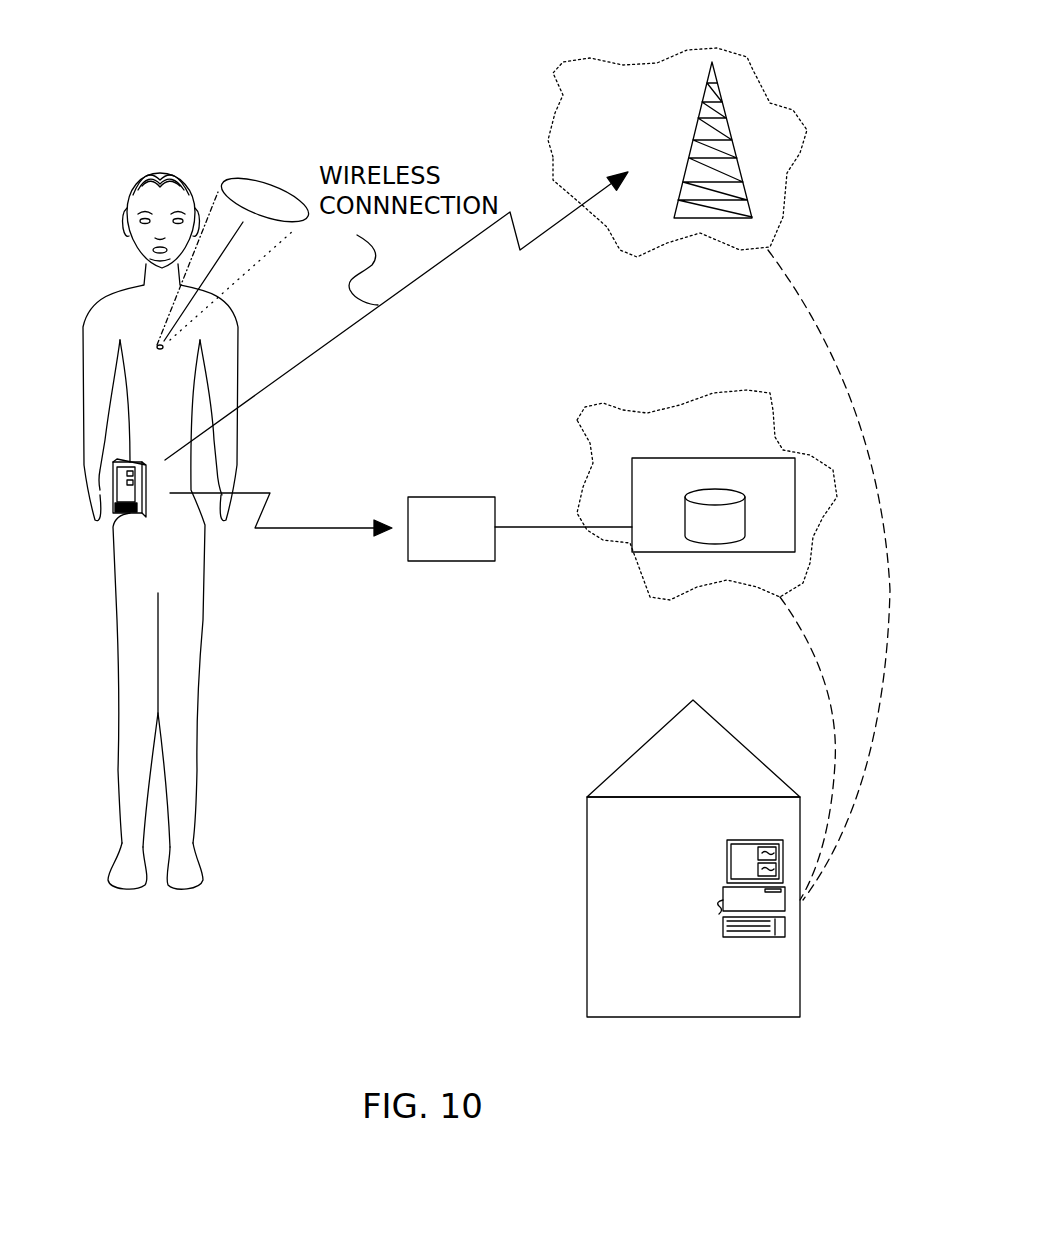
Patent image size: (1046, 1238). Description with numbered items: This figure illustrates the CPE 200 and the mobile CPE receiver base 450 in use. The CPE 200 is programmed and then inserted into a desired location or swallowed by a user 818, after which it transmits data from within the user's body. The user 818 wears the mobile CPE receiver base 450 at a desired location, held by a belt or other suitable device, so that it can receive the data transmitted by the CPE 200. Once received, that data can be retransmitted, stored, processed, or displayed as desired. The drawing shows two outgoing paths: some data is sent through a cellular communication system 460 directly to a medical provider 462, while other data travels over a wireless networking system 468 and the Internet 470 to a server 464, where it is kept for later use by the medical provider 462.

The user 818 is at (116, 288).
The CPE 200 is at (236, 165).
The mobile CPE receiver base 450 is at (110, 488).
The cellular communication system 460 is at (548, 150).
The medical provider 462 is at (587, 845).
The server 464 is at (755, 458).
The wireless networking system 468 is at (450, 497).
The Internet 470 is at (570, 503).